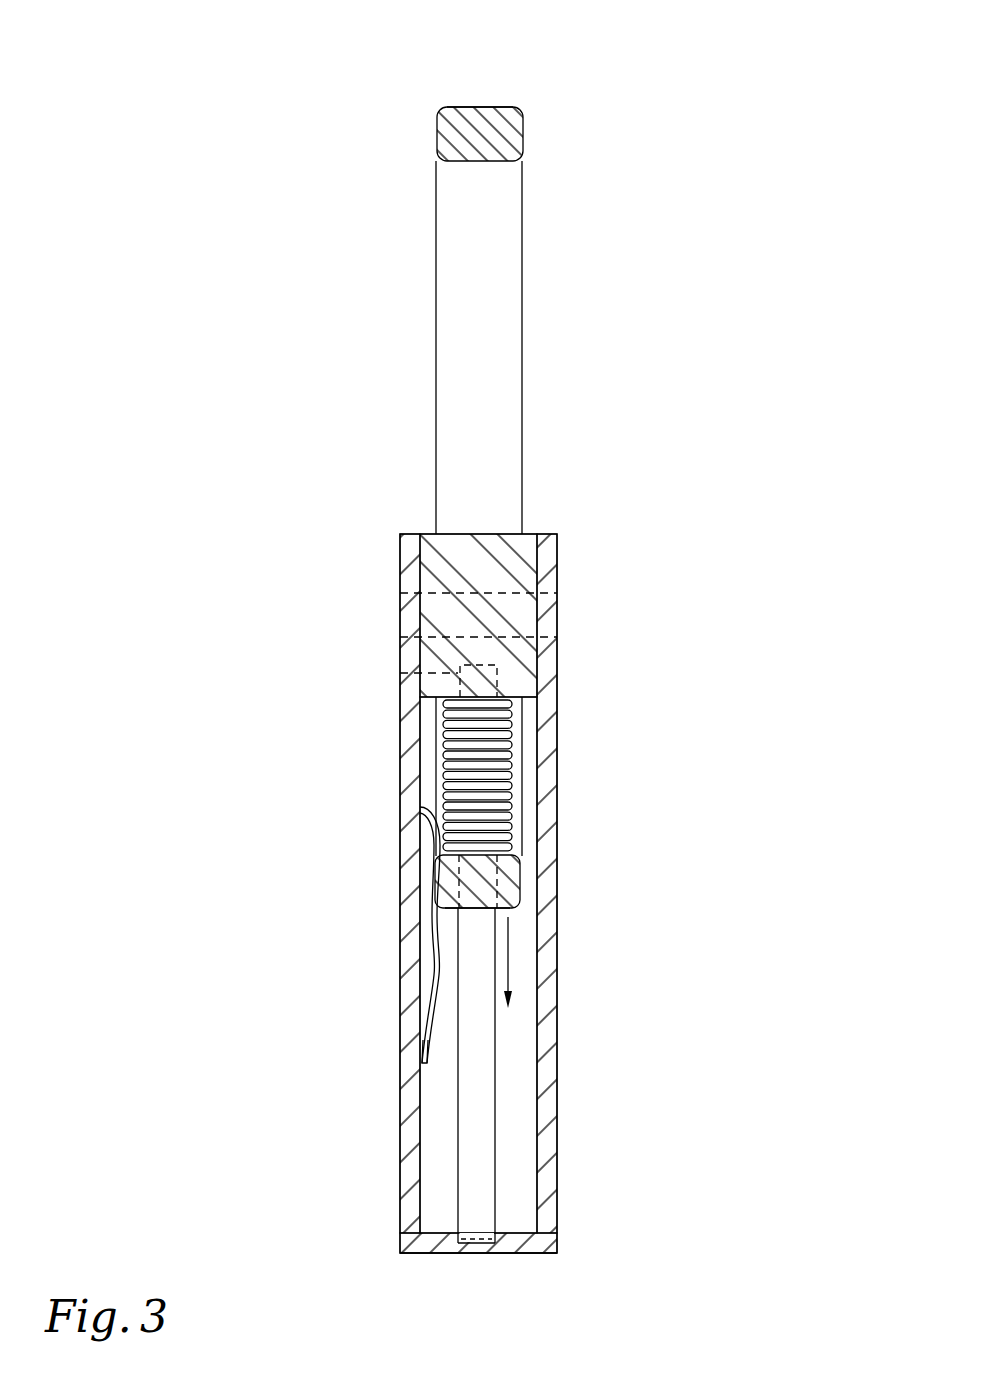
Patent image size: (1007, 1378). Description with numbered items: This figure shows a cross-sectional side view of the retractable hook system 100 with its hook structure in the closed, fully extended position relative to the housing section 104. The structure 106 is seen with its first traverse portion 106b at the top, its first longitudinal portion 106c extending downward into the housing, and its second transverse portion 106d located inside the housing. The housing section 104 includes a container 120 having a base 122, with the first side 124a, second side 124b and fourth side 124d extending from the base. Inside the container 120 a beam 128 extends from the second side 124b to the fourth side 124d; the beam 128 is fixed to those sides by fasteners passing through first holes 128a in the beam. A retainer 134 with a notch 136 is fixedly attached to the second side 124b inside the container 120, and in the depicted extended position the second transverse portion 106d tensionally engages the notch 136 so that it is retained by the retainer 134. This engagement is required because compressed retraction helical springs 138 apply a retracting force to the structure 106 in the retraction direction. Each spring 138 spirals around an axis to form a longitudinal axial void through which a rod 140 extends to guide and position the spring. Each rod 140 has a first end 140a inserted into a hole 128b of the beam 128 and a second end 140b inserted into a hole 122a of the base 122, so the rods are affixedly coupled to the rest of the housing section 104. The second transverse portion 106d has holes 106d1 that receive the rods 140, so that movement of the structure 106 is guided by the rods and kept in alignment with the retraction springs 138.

The retractable hook system 100 is at (188, 58).
The housing section 104 is at (602, 1236).
The structure 106 is at (500, 137).
The first traverse portion 106b is at (489, 107).
The first longitudinal portion 106c is at (522, 307).
The second transverse portion 106d is at (510, 870).
The holes 106d1 is at (517, 888).
The container 120 is at (410, 1163).
The base 122 is at (413, 1254).
The holes 122a is at (509, 1254).
The first side 124a is at (513, 1186).
The second side 124b is at (557, 1122).
The fourth side 124d is at (400, 1113).
The beam 128 is at (447, 568).
The first holes 128a is at (517, 592).
The holes 128b is at (420, 673).
The retainer 134 is at (423, 1053).
The notch 136 is at (430, 892).
The retraction helical springs 138 is at (445, 742).
The rods 140 is at (497, 1060).
The first end 140a is at (497, 681).
The second end 140b is at (485, 1252).